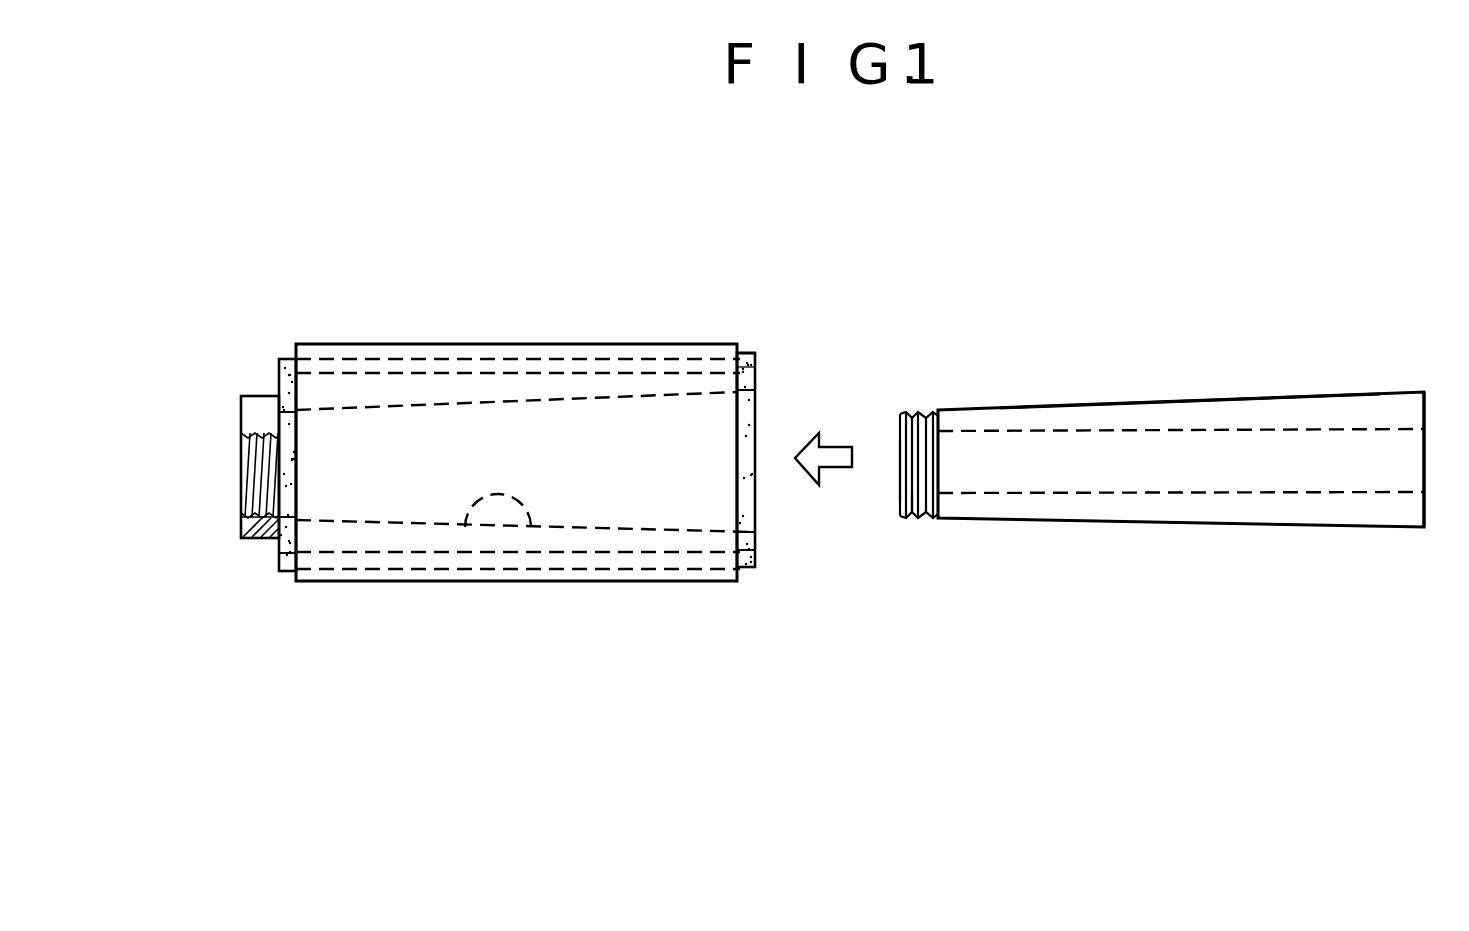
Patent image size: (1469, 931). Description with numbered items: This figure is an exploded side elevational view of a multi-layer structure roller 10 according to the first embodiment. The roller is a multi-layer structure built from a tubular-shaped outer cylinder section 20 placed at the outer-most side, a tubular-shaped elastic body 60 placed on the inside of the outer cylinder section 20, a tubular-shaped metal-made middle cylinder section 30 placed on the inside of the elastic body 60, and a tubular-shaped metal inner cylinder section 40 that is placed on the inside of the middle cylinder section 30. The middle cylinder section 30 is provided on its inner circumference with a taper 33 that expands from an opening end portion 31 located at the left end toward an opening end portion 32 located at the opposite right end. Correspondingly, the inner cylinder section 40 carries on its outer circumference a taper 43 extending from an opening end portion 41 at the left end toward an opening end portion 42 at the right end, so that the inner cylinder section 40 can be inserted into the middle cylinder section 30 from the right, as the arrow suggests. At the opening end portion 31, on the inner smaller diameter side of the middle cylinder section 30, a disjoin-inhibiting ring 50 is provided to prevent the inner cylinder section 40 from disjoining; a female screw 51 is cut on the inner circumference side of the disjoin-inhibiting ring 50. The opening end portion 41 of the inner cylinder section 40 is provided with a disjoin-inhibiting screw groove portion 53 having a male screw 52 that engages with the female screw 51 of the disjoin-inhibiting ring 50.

The multi-layer structure roller 10 is at (351, 219).
The outer cylinder section 20 is at (523, 342).
The middle cylinder section 30 is at (615, 385).
The opening end portion 31 is at (278, 383).
The opening end portion 32 is at (760, 375).
The taper 33 is at (533, 527).
The inner cylinder section 40 is at (1293, 415).
The opening end portion 41 is at (925, 415).
The opening end portion 42 is at (1426, 413).
The taper 43 is at (1163, 400).
The disjoin-inhibiting ring 50 is at (260, 540).
The female screw 51 is at (250, 468).
The male screw 52 is at (900, 482).
The disjoin-inhibiting screw groove portion 53 is at (917, 520).
The elastic body 60 is at (745, 352).